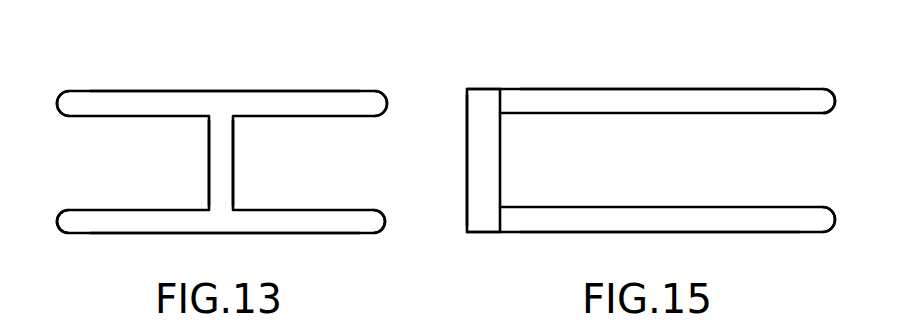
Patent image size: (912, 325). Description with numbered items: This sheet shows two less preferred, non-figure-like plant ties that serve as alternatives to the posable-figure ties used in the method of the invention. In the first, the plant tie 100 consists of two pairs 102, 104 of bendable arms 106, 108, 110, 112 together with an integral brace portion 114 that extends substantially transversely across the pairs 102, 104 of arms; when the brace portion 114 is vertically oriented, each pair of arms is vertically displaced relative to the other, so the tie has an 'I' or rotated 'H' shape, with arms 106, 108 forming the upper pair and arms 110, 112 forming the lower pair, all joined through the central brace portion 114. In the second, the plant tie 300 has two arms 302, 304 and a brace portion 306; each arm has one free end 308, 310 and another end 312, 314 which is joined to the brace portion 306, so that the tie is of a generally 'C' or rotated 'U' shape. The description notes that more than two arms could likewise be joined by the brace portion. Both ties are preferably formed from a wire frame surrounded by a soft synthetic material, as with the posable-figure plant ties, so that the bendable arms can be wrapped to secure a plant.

In FIG. 13, the plant tie 100 is at (408, 45).
In FIG. 13, the pair of bendable arms 102 is at (173, 100).
In FIG. 13, the pair of bendable arms 104 is at (180, 231).
In FIG. 13, the bendable arm 106 is at (75, 98).
In FIG. 13, the bendable arm 108 is at (355, 96).
In FIG. 13, the bendable arm 110 is at (88, 229).
In FIG. 13, the bendable arm 112 is at (340, 237).
In FIG. 13, the brace portion 114 is at (230, 164).
In FIG. 15, the plant tie 300 is at (764, 54).
In FIG. 15, the arm 302 is at (680, 92).
In FIG. 15, the arm 304 is at (642, 229).
In FIG. 15, the brace portion 306 is at (468, 158).
In FIG. 15, the free end 308 is at (807, 113).
In FIG. 15, the free end 310 is at (843, 199).
In FIG. 15, the joined end 312 is at (502, 95).
In FIG. 15, the joined end 314 is at (508, 227).